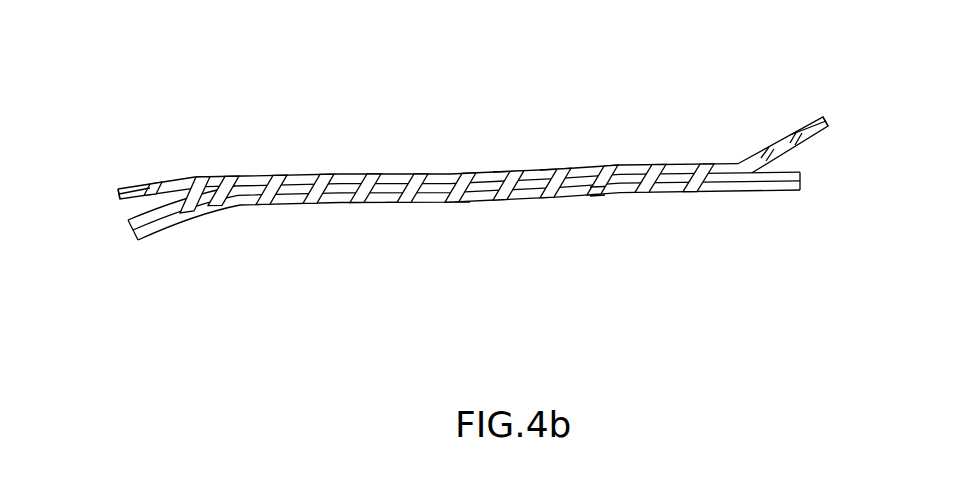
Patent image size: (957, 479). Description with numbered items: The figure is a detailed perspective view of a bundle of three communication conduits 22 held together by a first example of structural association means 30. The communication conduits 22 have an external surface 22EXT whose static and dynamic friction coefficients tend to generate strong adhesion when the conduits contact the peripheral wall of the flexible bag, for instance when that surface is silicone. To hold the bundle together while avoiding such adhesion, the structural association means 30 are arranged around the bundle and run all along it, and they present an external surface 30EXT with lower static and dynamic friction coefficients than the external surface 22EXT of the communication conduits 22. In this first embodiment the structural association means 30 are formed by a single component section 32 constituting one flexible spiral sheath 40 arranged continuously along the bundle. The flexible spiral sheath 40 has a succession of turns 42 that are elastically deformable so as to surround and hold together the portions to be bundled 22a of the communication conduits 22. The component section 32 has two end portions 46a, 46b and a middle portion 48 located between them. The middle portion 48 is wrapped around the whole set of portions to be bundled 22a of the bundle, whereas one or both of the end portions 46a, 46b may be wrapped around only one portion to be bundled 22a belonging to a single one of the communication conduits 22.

The communication conduits 22 is at (755, 197).
The portions to be bundled 22a is at (496, 174).
The external surface of the communication conduits 22EXT is at (545, 174).
The structural association means 30 is at (596, 207).
The component section 32 is at (579, 253).
The external surface of the structural association means 30EXT is at (463, 193).
The flexible spiral sheath 40 is at (397, 206).
The turns 42 is at (283, 177).
The end portion 46a is at (800, 152).
The end portion 46b is at (152, 176).
The middle portion 48 is at (417, 177).